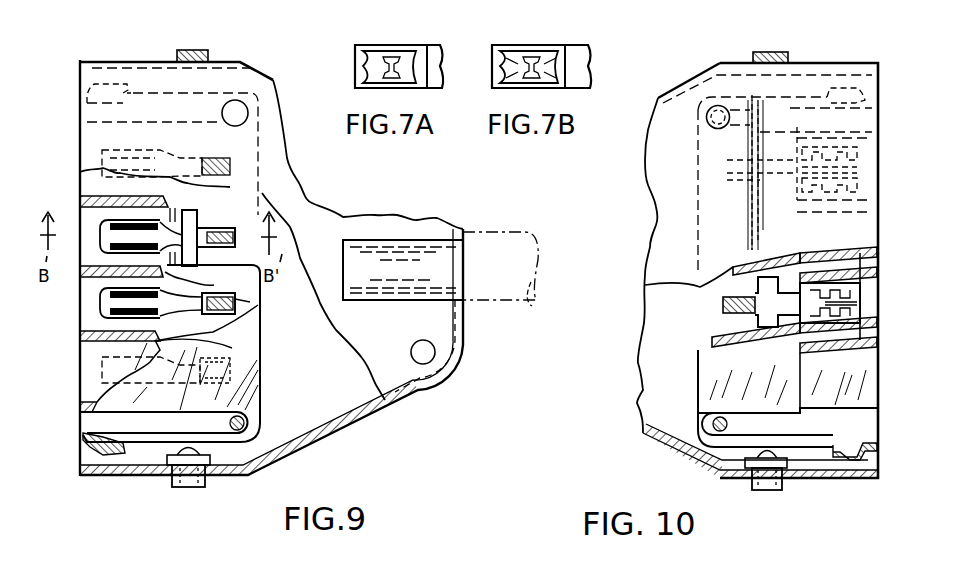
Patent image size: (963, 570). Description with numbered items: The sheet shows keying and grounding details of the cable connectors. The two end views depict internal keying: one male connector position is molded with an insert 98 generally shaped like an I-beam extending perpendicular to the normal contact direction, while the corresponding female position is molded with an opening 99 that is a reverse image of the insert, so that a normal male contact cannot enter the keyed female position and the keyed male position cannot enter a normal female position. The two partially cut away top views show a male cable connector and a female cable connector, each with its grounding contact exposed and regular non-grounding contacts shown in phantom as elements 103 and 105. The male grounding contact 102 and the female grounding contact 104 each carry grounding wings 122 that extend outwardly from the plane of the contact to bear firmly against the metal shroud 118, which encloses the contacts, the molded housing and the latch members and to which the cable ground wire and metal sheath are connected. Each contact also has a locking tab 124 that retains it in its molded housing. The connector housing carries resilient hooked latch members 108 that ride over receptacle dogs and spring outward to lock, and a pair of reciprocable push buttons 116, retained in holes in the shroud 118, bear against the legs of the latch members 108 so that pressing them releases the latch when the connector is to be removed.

In FIG. 7A, the insert 98 is at (393, 56).
In FIG. 7B, the opening 99 is at (535, 56).
In FIG. 9, the male grounding contact 102 is at (102, 306).
In FIG. 9, the connector terminal 103 is at (223, 155).
In FIG. 10, the female grounding contact 104 is at (758, 305).
In FIG. 10, the terminal block 105 is at (853, 170).
In FIG. 9, the hooked latch members 108 is at (84, 95).
In FIG. 10, the hooked latch members 108 is at (860, 102).
In FIG. 9, the push buttons 116 is at (208, 56).
In FIG. 10, the push buttons 116 is at (772, 56).
In FIG. 9, the metal shroud 118 is at (413, 378).
In FIG. 10, the metal shroud 118 is at (683, 98).
In FIG. 9, the grounding wings 122 is at (205, 282).
In FIG. 9, the locking tab 124 is at (192, 222).